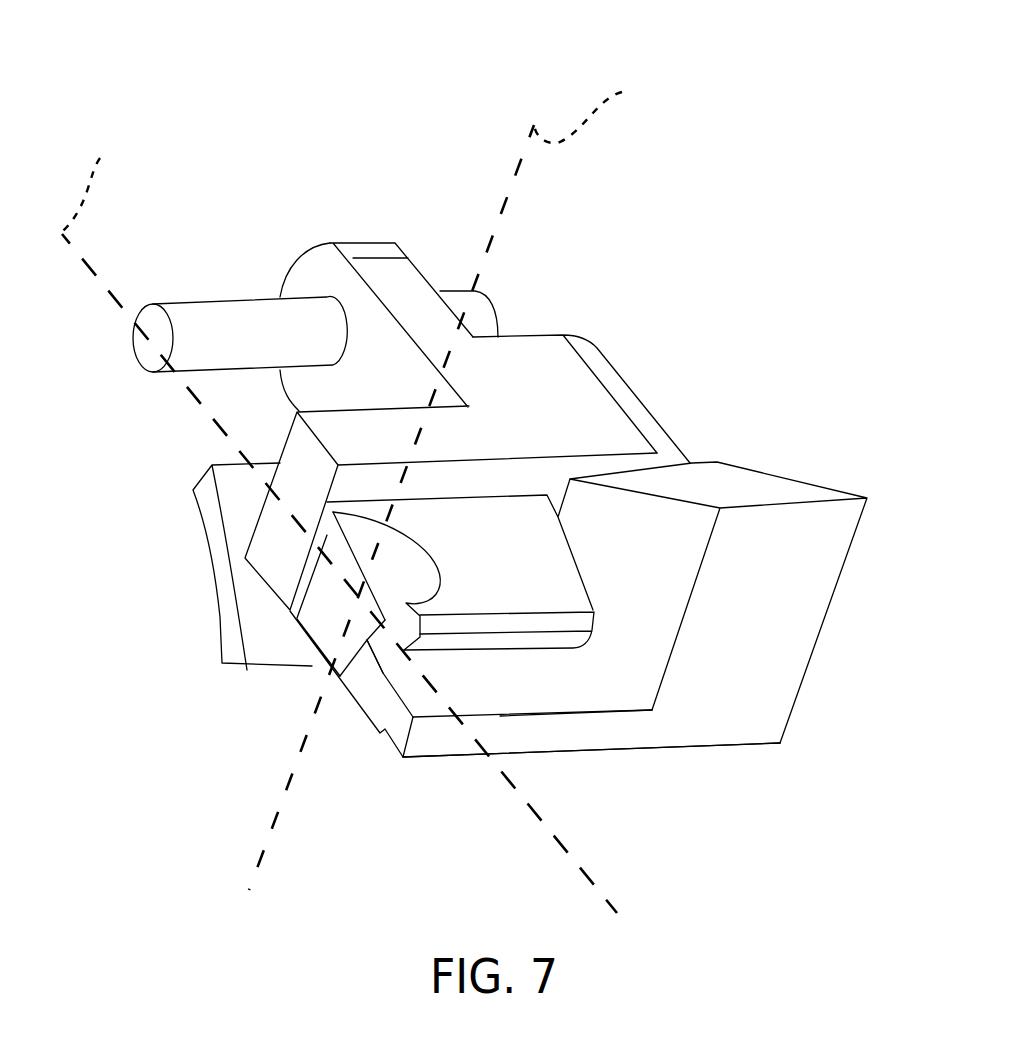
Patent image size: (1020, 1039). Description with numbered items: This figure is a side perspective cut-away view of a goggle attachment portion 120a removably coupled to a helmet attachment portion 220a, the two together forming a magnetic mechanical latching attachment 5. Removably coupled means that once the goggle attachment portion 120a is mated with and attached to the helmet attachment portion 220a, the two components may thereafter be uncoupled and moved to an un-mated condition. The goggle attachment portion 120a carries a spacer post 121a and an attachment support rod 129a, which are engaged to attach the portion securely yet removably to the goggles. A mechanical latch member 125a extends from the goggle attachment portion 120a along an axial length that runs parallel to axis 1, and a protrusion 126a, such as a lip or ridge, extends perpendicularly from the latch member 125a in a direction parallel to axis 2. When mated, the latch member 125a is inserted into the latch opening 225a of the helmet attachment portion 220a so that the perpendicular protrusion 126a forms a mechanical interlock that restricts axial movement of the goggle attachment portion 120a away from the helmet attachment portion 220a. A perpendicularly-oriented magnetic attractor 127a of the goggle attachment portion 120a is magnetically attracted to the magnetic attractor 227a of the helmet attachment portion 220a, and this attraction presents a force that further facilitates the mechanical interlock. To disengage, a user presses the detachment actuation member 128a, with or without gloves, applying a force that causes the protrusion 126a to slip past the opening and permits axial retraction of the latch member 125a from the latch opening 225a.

The axis 1 is at (339, 524).
The axis 2 is at (447, 483).
The magnetic mechanical latching attachment 5 is at (710, 255).
The goggle attachment portion 120a is at (590, 315).
The spacer post 121a is at (363, 250).
The latch member 125a is at (507, 623).
The protrusion 126a is at (358, 650).
The magnetic attractor 127a is at (358, 555).
The detachment actuation member 128a is at (223, 598).
The attachment support rod 129a is at (203, 305).
The helmet attachment portion 220a is at (773, 753).
The latch opening 225a is at (585, 675).
The magnetic attractor 227a is at (366, 683).